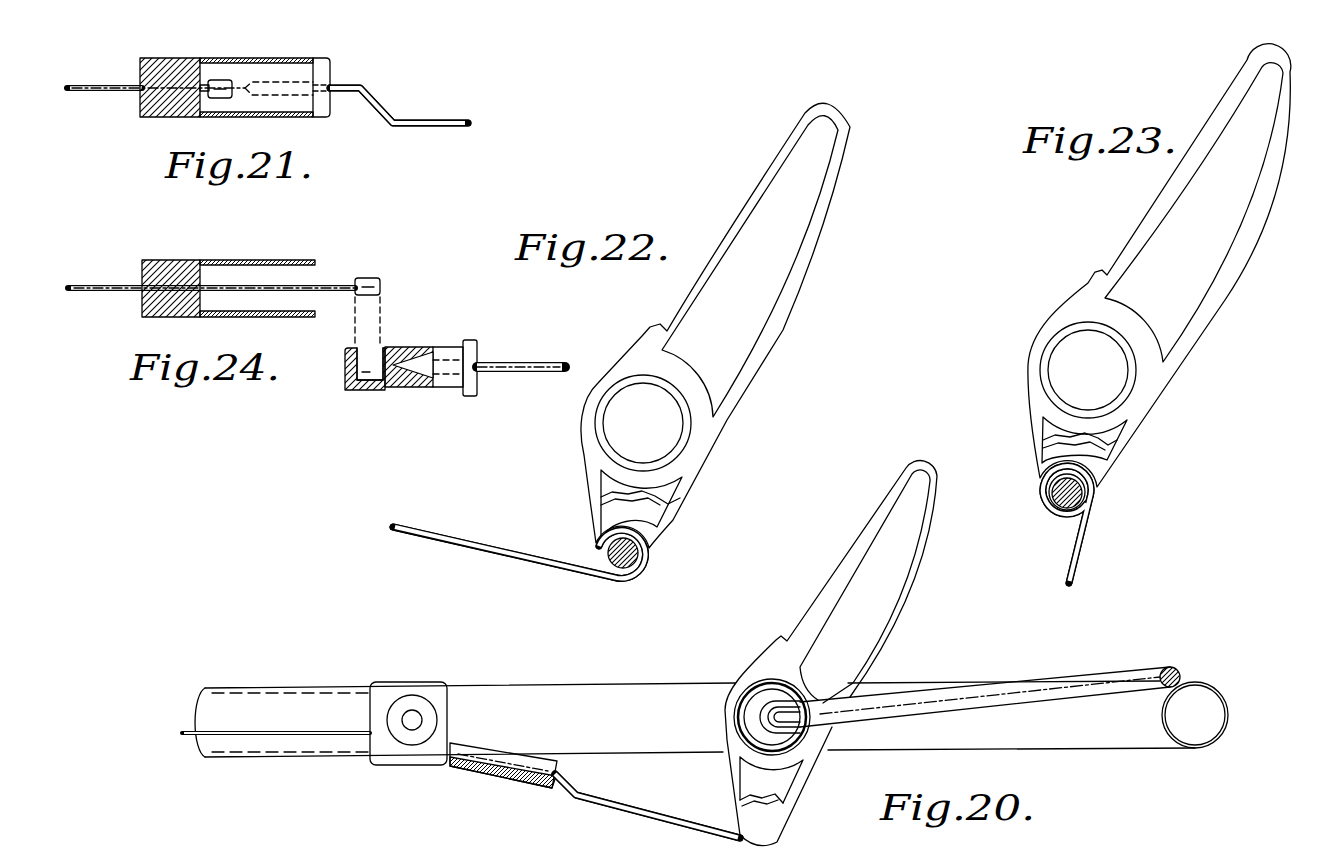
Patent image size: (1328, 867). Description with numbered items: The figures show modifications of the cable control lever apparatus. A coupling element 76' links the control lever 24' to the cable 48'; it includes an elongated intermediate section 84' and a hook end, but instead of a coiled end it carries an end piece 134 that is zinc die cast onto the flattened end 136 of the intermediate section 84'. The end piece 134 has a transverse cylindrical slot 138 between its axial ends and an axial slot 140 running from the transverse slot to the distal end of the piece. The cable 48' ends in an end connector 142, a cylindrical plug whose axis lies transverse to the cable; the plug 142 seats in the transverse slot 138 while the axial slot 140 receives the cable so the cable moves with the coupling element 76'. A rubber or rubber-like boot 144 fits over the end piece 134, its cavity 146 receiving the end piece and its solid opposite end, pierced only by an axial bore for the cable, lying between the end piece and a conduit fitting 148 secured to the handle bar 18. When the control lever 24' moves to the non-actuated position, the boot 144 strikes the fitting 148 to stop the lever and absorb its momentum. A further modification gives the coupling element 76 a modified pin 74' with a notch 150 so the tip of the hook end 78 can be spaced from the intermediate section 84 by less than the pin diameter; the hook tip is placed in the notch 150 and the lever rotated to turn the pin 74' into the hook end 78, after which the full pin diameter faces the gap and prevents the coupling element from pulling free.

In FIG. 20, the handle bar 18 is at (1240, 697).
In FIG. 22, the control lever 24' is at (715, 325).
In FIG. 23, the control lever 24' is at (1164, 265).
In FIG. 20, the control lever 24' is at (831, 653).
In FIG. 21, the cable 48' is at (155, 131).
In FIG. 24, the cable 48' is at (211, 318).
In FIG. 20, the cable 48' is at (276, 717).
In FIG. 22, the modified pin 74' is at (646, 566).
In FIG. 23, the modified pin 74' is at (1116, 481).
In FIG. 22, the coupling element 76 is at (519, 521).
In FIG. 23, the coupling element 76 is at (1095, 529).
In FIG. 21, the coupling element 76' is at (406, 93).
In FIG. 20, the coupling element 76' is at (647, 806).
In FIG. 22, the hook end 78 is at (643, 550).
In FIG. 23, the hook end 78 is at (1048, 474).
In FIG. 22, the intermediate section 84 is at (519, 559).
In FIG. 23, the intermediate section 84 is at (1098, 524).
In FIG. 21, the intermediate section 84' is at (390, 136).
In FIG. 24, the intermediate section 84' is at (521, 397).
In FIG. 20, the intermediate section 84' is at (647, 818).
In FIG. 21, the end piece 134 is at (250, 77).
In FIG. 24, the end piece 134 is at (445, 348).
In FIG. 21, the end of the intermediate section 136 is at (288, 92).
In FIG. 24, the transverse cylindrical slot 138 is at (367, 373).
In FIG. 24, the axial slot 140 is at (345, 362).
In FIG. 21, the end connector 142 is at (211, 80).
In FIG. 24, the end connector 142 is at (365, 277).
In FIG. 21, the boot 144 is at (160, 106).
In FIG. 24, the boot 144 is at (182, 262).
In FIG. 20, the boot 144 is at (500, 738).
In FIG. 24, the cavity 146 is at (268, 276).
In FIG. 20, the conduit fitting 148 is at (398, 690).
In FIG. 23, the notch 150 is at (1053, 502).